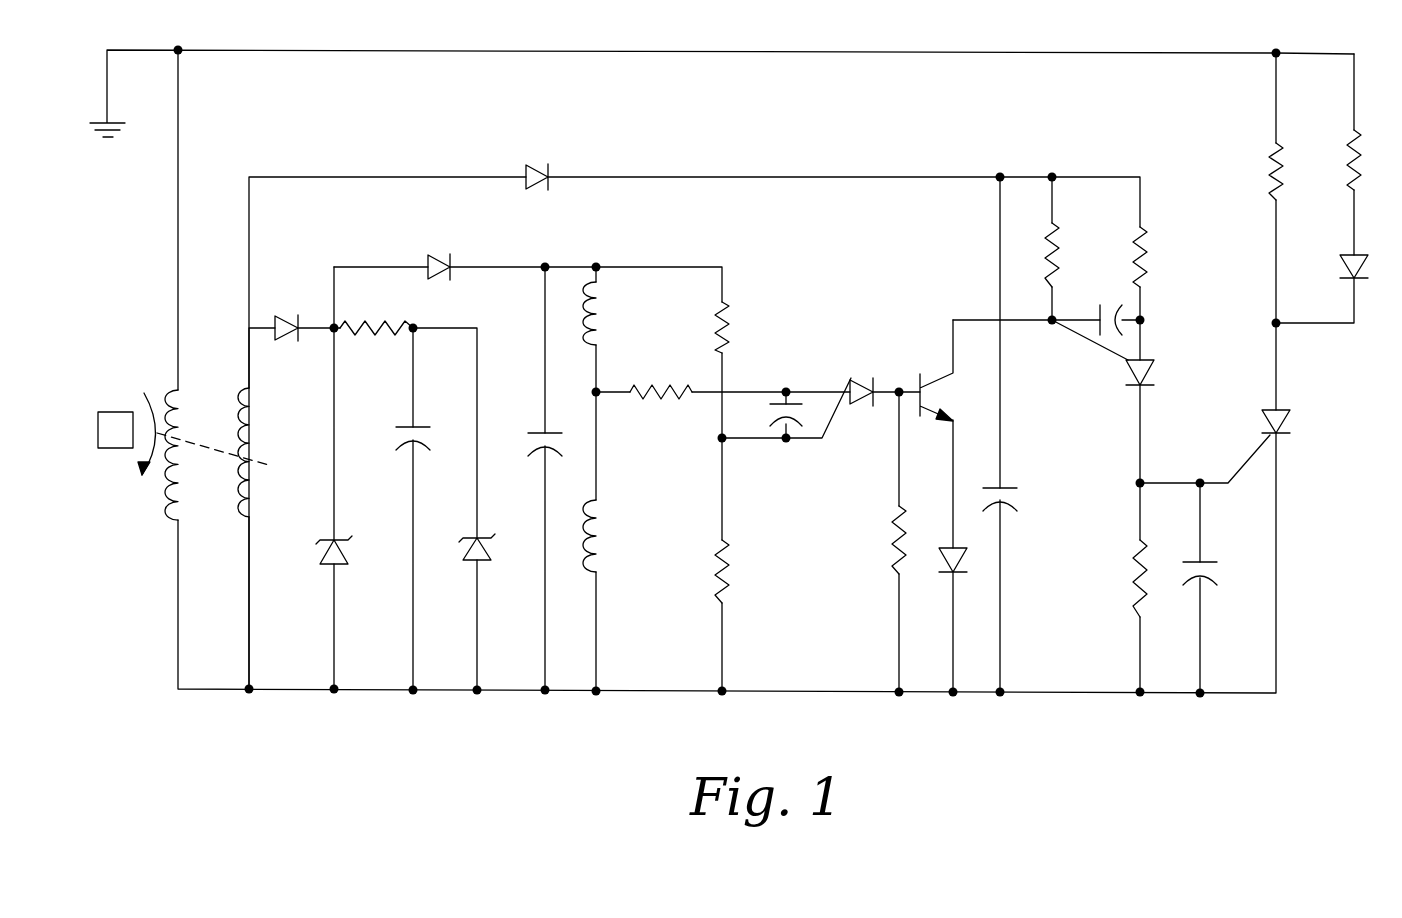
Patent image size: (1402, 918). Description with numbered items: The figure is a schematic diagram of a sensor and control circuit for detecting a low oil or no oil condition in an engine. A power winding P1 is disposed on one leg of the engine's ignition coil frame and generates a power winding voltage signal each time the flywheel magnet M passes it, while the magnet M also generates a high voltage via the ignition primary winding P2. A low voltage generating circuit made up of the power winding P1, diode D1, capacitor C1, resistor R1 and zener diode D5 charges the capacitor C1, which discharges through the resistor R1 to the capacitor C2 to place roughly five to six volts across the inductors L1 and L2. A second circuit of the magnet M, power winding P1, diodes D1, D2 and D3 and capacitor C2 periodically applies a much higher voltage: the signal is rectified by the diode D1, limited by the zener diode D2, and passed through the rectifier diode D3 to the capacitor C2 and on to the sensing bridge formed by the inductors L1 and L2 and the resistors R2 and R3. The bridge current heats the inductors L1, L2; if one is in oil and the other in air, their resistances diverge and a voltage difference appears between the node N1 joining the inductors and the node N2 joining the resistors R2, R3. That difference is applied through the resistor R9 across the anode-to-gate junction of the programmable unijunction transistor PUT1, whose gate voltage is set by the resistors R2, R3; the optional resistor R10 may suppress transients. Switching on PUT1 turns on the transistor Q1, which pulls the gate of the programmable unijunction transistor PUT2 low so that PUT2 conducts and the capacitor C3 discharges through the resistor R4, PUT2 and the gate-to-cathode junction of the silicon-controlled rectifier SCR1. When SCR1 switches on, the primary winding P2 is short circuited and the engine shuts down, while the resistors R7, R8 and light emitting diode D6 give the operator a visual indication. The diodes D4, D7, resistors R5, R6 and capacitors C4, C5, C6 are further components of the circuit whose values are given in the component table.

The flywheel magnet M is at (118, 455).
The power winding P1 is at (240, 497).
The ignition primary winding P2 is at (166, 497).
The diode D1 is at (300, 284).
The zener diode D2 is at (330, 562).
The rectifier diode D3 is at (490, 216).
The diode D4 is at (540, 165).
The zener diode D5 is at (473, 560).
The light emitting diode D6 is at (1355, 272).
The diode D7 is at (945, 565).
The resistor R1 is at (352, 325).
The resistor R2 is at (727, 305).
The resistor R3 is at (718, 585).
The resistor R4 is at (1145, 250).
The resistor R5 is at (1058, 240).
The resistor R6 is at (1138, 580).
The resistor R7 is at (1272, 143).
The resistor R8 is at (1350, 130).
The resistor R9 is at (640, 383).
The resistor R10 is at (897, 548).
The capacitor C1 is at (405, 425).
The capacitor C2 is at (540, 452).
The capacitor C3 is at (995, 520).
The capacitor C4 is at (1205, 560).
The capacitor C5 is at (775, 432).
The capacitor C6 is at (1112, 276).
The inductor L1 is at (592, 293).
The inductor L2 is at (598, 513).
The node N1 is at (578, 392).
The node N2 is at (722, 438).
The transistor Q1 is at (938, 374).
The programmable unijunction transistor PUT1 is at (918, 316).
The programmable unijunction transistor PUT2 is at (1125, 375).
The silicon-controlled rectifier SCR1 is at (1290, 415).